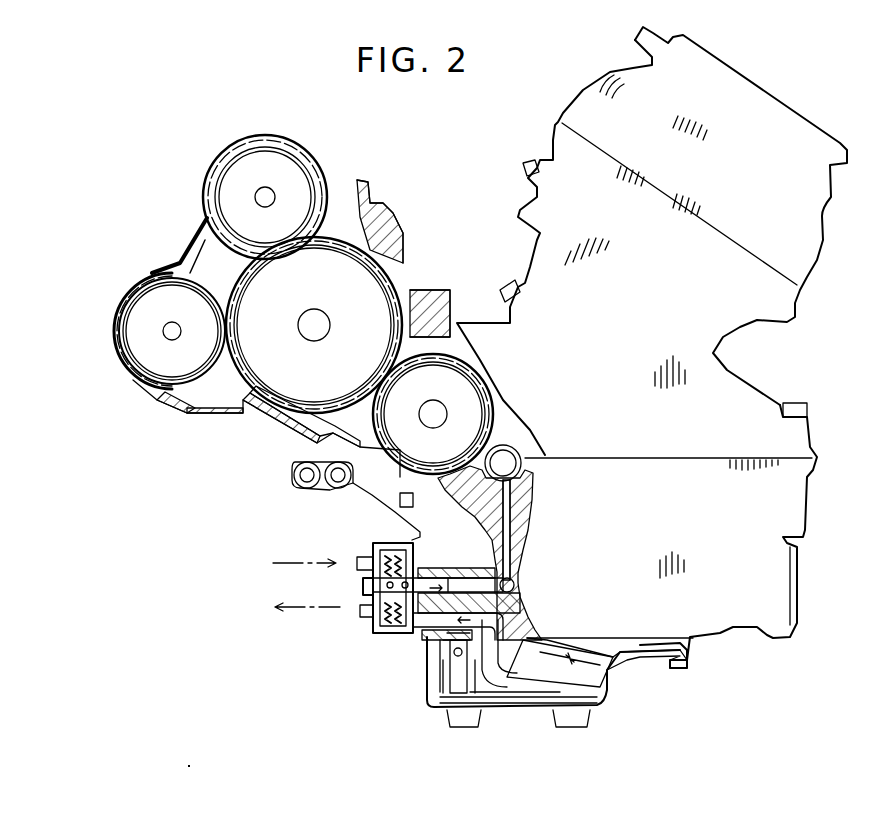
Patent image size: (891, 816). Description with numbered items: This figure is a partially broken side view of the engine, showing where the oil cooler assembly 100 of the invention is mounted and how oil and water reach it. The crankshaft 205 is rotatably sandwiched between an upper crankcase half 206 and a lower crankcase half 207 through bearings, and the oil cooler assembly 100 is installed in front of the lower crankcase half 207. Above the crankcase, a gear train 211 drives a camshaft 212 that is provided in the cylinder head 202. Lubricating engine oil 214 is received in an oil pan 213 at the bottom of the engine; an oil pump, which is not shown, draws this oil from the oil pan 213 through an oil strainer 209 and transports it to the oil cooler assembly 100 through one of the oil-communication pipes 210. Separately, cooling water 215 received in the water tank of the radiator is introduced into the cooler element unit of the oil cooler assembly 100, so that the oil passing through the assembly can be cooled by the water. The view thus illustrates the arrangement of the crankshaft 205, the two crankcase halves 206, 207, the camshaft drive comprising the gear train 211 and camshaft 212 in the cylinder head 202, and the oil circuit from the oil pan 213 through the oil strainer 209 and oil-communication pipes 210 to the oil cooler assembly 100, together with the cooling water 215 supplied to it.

The oil cooler assembly 100 is at (380, 640).
The cylinder head 202 is at (197, 417).
The crankshaft 205 is at (535, 467).
The upper crankcase half 206 is at (740, 388).
The lower crankcase half 207 is at (788, 594).
The oil strainer 209 is at (483, 687).
The oil-communication pipes 210 is at (583, 710).
The gear train 211 is at (237, 273).
The camshaft 212 is at (172, 320).
The oil pan 213 is at (613, 677).
The engine oil 214 is at (580, 640).
The cooling water 215 is at (300, 563).